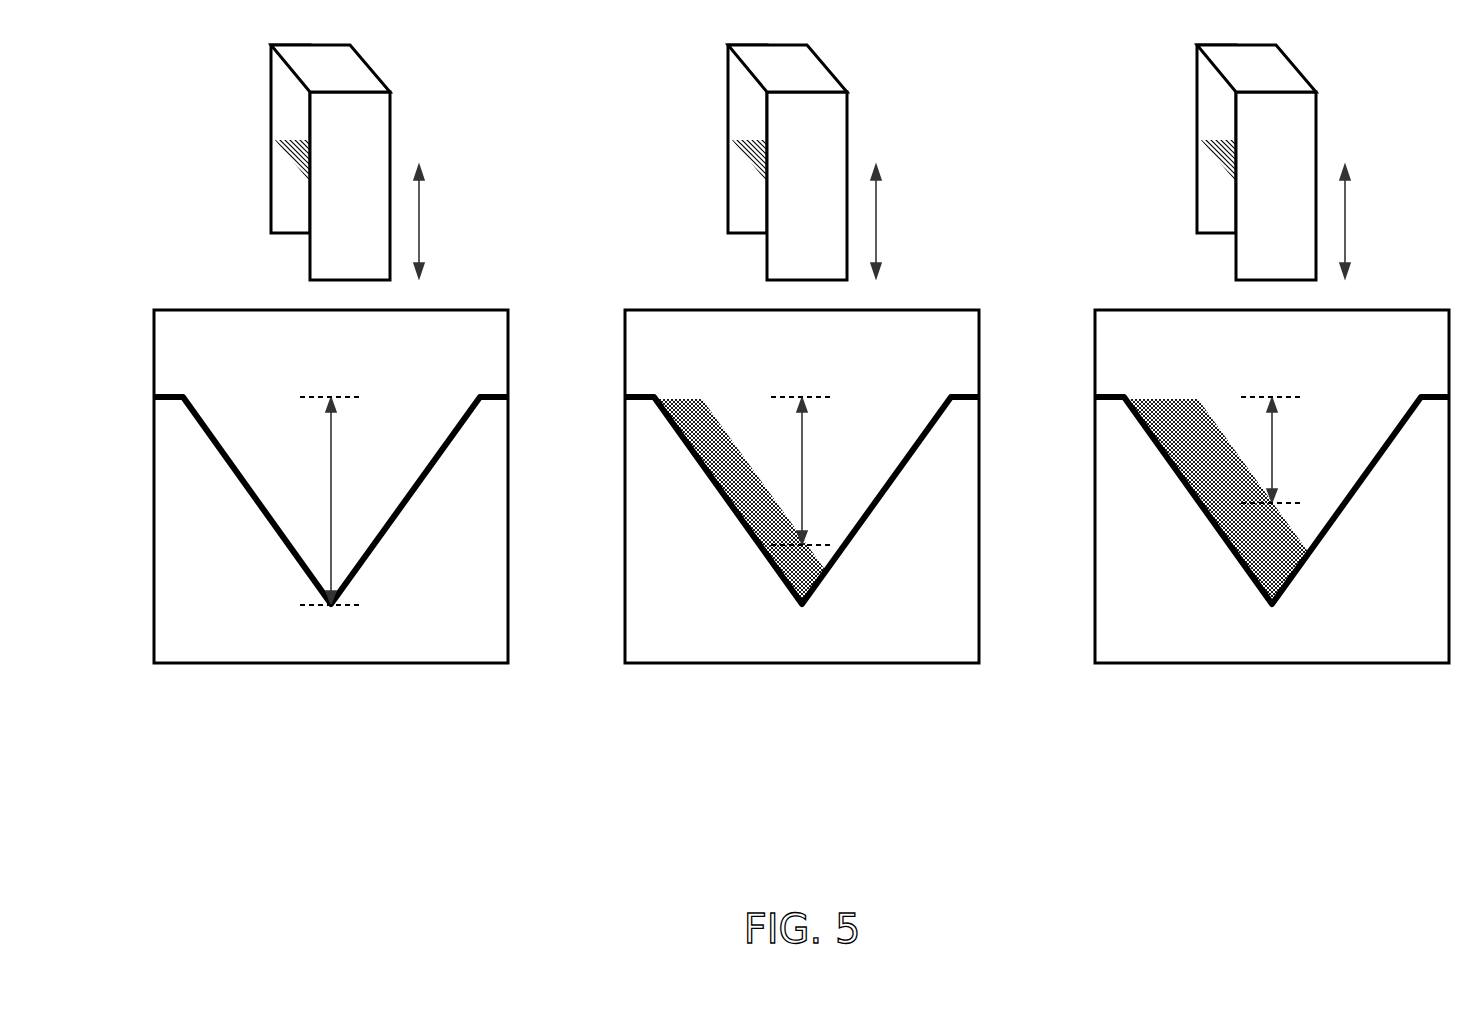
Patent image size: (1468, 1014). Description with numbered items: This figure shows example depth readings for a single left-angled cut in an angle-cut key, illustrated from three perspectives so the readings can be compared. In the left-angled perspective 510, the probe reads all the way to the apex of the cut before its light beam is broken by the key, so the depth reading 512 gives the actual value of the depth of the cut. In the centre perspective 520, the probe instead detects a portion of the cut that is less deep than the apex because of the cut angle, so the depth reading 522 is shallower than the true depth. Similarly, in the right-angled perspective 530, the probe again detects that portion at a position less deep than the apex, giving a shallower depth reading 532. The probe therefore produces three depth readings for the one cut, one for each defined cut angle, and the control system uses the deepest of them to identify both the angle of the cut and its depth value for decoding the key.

The left-angled perspective 510 is at (154, 340).
The depth reading 512 is at (368, 464).
The centre perspective 520 is at (625, 340).
The depth reading 522 is at (839, 464).
The right-angled perspective 530 is at (1095, 340).
The depth reading 532 is at (1309, 464).